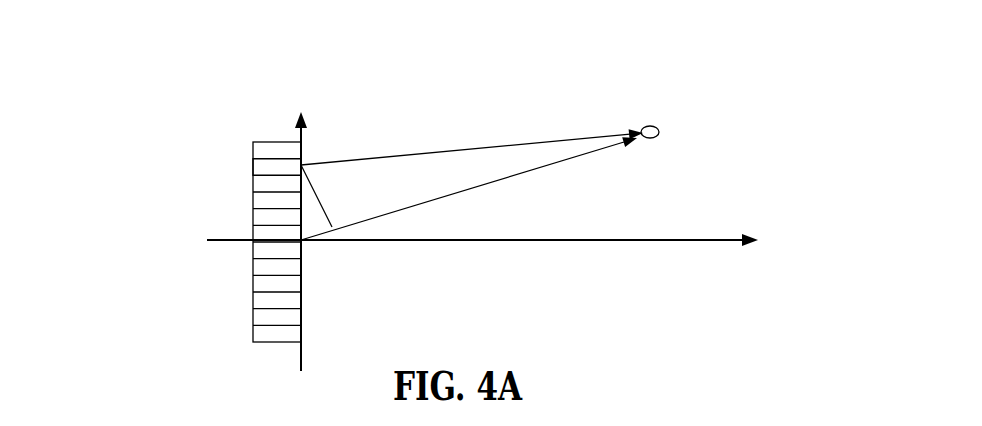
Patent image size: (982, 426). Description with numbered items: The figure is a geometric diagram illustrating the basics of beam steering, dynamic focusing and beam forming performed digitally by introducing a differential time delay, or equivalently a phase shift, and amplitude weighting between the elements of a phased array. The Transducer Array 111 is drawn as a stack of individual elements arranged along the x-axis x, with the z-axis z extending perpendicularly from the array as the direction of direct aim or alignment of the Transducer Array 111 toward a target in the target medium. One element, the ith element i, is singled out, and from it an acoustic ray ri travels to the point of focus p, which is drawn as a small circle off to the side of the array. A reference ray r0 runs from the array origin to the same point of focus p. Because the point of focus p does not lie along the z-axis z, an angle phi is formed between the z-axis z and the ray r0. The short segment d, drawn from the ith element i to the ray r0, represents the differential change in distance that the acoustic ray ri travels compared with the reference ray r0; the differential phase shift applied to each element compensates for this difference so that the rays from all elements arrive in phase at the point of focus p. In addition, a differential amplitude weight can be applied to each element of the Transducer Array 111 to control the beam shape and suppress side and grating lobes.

The Transducer Array 111 is at (275, 118).
The x-axis x is at (300, 229).
The z-axis z is at (495, 242).
The ith element i is at (214, 167).
The acoustic ray r_i ri is at (472, 139).
The reference ray r_0 r0 is at (469, 188).
The differential change in distance d is at (316, 198).
The angle θ phi is at (388, 226).
The point of focus p is at (696, 134).